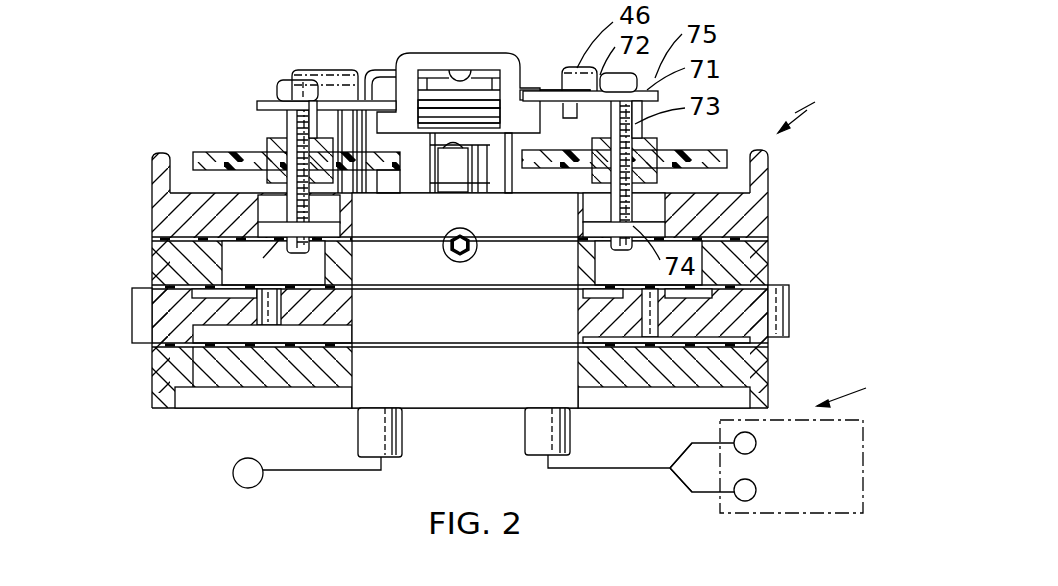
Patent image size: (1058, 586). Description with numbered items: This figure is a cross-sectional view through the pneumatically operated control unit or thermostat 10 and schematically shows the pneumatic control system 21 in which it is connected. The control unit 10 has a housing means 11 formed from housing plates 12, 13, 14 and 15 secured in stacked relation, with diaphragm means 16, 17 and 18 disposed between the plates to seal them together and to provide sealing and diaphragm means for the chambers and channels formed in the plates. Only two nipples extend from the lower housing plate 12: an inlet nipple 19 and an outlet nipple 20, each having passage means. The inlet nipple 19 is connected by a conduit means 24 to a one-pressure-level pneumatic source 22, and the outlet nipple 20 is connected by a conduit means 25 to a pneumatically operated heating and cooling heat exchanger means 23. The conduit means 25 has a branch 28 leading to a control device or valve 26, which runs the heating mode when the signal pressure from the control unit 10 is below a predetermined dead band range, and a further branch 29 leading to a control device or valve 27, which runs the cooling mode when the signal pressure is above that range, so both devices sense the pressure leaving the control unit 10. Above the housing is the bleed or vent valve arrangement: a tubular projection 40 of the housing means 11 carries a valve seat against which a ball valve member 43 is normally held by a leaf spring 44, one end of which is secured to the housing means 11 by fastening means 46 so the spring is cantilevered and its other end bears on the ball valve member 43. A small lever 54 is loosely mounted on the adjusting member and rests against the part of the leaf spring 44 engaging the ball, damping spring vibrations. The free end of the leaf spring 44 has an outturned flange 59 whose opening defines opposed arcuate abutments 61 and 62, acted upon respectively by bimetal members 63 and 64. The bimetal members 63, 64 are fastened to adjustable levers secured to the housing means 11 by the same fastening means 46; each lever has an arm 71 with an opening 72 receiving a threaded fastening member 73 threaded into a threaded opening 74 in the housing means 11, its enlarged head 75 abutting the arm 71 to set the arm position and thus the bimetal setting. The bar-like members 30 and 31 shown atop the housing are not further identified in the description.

The pneumatically operated control unit 10 is at (816, 110).
The housing means 11 is at (768, 182).
The housing plate 12 is at (770, 372).
The housing plate 13 is at (760, 318).
The housing plate 14 is at (760, 262).
The housing plate 15 is at (768, 208).
The diaphragm means 16 is at (765, 346).
The diaphragm means 17 is at (770, 285).
The diaphragm means 18 is at (770, 239).
The inlet nipple 19 is at (367, 428).
The outlet nipple 20 is at (530, 430).
The pneumatic control system 21 is at (865, 391).
The pneumatic source 22 is at (238, 462).
The heating and cooling heat exchanger means 23 is at (863, 447).
The conduit means 24 is at (332, 470).
The conduit means 25 is at (616, 470).
The control device or valve 26 is at (740, 433).
The control device or valve 27 is at (745, 501).
The branch 28 is at (678, 454).
The branch lead 29 is at (680, 486).
The contact plate 30 is at (217, 150).
The contact plate 31 is at (697, 150).
The tubular projection 40 is at (430, 167).
The ball valve member 43 is at (452, 143).
The leaf spring 44 is at (512, 185).
The fastening means 46 is at (310, 72).
The lever 54 is at (492, 168).
The outturned flange 59 is at (430, 53).
The arcuate abutment 61 is at (490, 108).
The arcuate abutment 62 is at (442, 112).
The bimetal member 63 is at (470, 120).
The bimetal member 64 is at (435, 112).
The arm 71 is at (272, 101).
The opening 72 is at (312, 95).
The threaded fastening member 73 is at (287, 122).
The threaded opening 74 is at (281, 251).
The enlarged head 75 is at (283, 86).